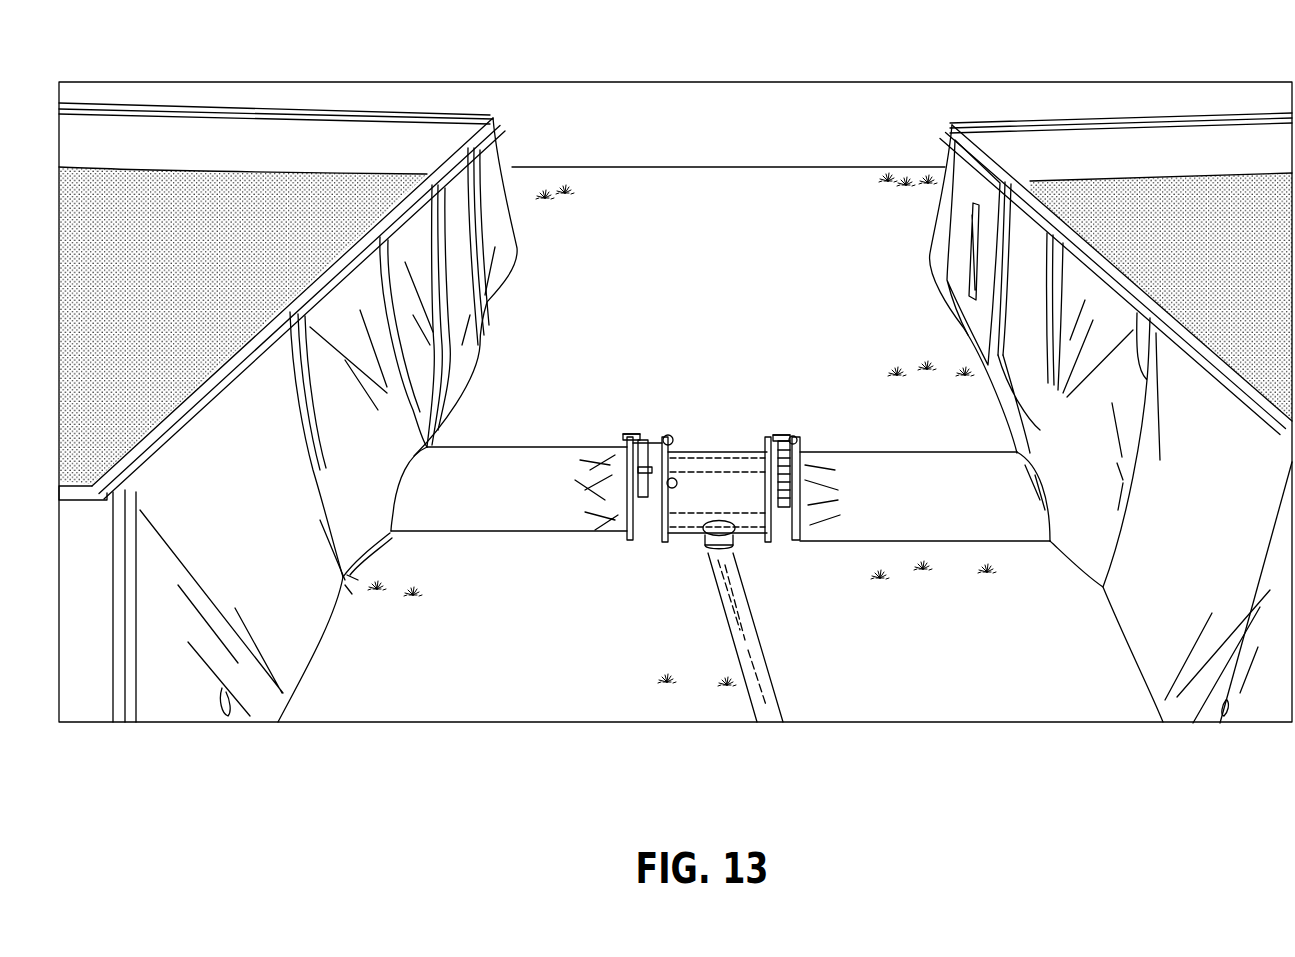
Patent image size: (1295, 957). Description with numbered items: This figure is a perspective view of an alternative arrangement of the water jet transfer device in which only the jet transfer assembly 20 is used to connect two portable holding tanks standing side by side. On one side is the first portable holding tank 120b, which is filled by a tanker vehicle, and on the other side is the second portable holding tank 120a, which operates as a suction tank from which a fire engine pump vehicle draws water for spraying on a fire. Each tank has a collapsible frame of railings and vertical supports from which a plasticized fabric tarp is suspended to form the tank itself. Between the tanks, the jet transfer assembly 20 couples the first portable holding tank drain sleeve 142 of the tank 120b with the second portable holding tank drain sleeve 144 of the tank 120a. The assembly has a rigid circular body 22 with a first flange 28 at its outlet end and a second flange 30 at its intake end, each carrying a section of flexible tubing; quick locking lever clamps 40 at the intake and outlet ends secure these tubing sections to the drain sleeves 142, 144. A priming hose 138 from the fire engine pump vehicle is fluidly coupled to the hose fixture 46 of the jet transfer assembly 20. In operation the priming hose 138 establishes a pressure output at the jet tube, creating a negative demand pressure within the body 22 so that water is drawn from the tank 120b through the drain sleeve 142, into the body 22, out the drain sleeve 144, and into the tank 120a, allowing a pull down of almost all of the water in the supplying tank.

The first portable holding tank 120a is at (445, 117).
The second portable holding tank 120b is at (1092, 113).
The second portable holding tank drain sleeve 144 is at (514, 500).
The first portable holding tank drain sleeve 142 is at (911, 510).
The jet transfer assembly 20 is at (723, 440).
The body 22 is at (710, 501).
The quick locking lever clamps 40 is at (633, 434).
The second flange 30 is at (663, 548).
The first flange 28 is at (772, 545).
The hose fixture 46 is at (708, 545).
The priming hose 138 is at (748, 613).